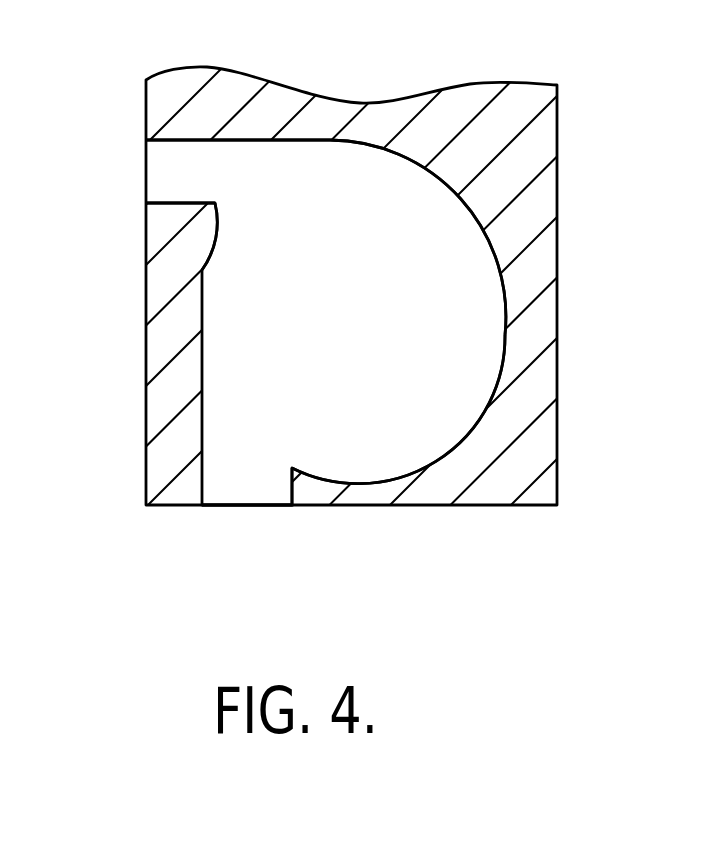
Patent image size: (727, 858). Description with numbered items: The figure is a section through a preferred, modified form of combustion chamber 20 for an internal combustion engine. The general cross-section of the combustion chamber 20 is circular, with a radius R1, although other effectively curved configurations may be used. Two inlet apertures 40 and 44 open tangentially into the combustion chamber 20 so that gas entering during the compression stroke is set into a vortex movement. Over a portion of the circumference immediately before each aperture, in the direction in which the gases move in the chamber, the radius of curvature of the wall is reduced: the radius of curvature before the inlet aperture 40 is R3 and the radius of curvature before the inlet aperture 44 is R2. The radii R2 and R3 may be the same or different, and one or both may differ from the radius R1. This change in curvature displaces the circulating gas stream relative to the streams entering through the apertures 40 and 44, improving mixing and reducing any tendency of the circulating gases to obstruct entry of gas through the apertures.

The combustion chamber 20 is at (340, 200).
The inlet aperture 40 is at (175, 167).
The inlet aperture 44 is at (252, 480).
The radius R1 is at (467, 217).
The radius of curvature R2 is at (343, 481).
The radius of curvature R3 is at (288, 247).